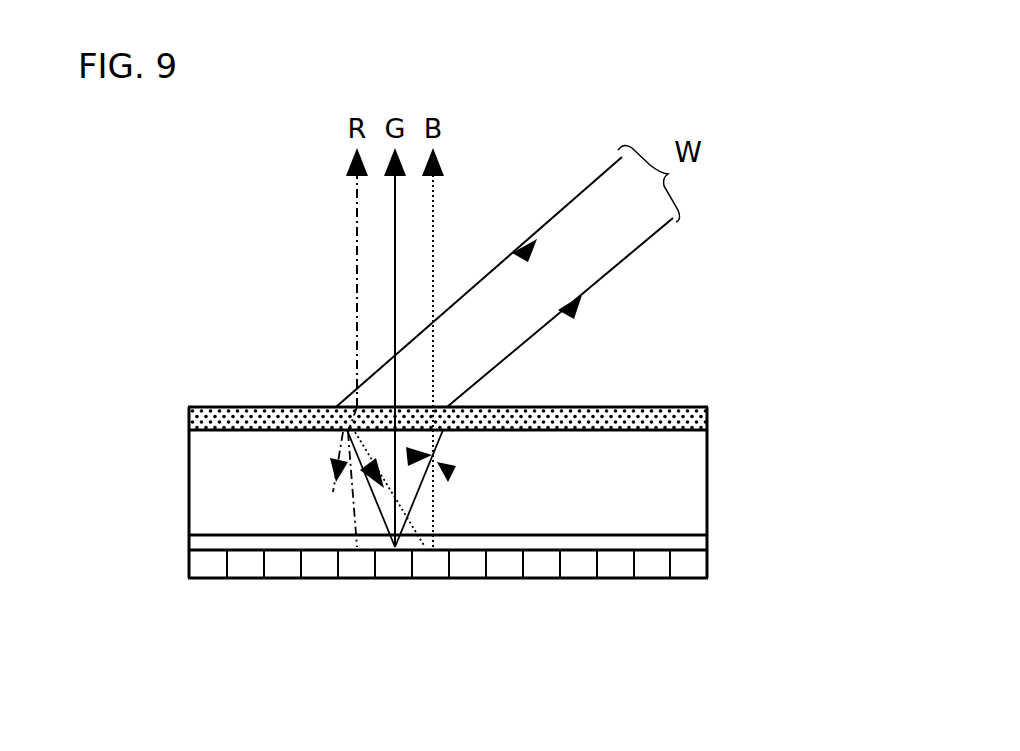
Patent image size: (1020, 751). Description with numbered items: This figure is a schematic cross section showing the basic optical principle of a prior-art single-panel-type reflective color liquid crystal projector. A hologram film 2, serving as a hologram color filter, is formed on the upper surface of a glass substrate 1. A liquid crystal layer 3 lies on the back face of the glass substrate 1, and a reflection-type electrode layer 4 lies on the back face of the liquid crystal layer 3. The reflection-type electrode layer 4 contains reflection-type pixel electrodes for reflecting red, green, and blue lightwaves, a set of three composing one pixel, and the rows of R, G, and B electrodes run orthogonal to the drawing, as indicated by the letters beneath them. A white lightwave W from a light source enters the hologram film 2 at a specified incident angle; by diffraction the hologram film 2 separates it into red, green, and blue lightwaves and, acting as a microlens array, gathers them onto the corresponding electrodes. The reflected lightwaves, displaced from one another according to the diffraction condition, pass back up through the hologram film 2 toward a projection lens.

The glass substrate 1 is at (657, 470).
The hologram film 2 is at (648, 407).
The liquid crystal layer 3 is at (657, 545).
The reflection-type electrode layer 4 is at (648, 565).